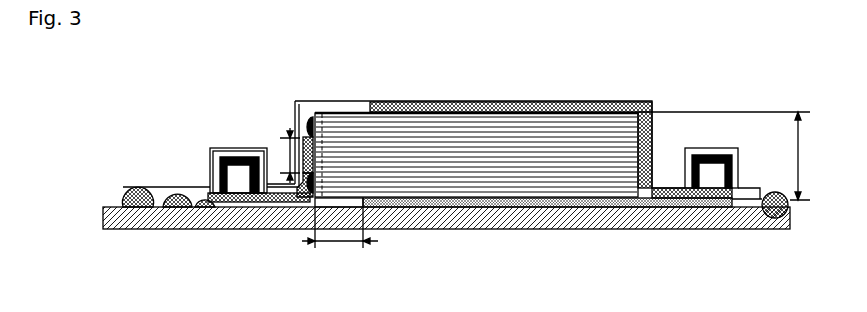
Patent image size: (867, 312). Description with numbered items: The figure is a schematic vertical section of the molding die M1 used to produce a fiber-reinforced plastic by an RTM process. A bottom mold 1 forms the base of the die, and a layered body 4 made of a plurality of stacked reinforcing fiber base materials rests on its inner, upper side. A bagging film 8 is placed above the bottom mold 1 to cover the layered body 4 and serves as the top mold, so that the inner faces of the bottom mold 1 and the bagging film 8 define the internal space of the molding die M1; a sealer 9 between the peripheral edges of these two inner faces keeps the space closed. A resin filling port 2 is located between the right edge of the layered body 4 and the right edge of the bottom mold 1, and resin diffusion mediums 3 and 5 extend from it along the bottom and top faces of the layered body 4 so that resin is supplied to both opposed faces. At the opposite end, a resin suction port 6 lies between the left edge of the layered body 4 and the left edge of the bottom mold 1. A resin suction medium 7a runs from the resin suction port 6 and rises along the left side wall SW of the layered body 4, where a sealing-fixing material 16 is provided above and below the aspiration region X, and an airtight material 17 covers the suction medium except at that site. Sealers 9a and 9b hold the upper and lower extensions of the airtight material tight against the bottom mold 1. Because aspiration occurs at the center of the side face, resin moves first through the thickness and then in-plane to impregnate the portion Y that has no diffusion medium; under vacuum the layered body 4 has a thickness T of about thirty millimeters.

The bottom mold 1 is at (730, 222).
The resin filling port 2 is at (718, 155).
The resin diffusion medium 3 is at (580, 200).
The layered body 4 is at (550, 130).
The resin diffusion medium 5 is at (627, 108).
The resin suction port 6 is at (240, 185).
The resin suction medium 7a is at (240, 193).
The bagging film 8 is at (384, 100).
The sealer 9 is at (808, 225).
The sealer 9a is at (168, 207).
The sealer 9b is at (198, 205).
The sealing-fixing material 16 is at (308, 118).
The airtight material 17 is at (266, 193).
The left side wall SW is at (322, 158).
The region X is at (290, 148).
The portion Y is at (340, 241).
The thickness T is at (738, 156).
The molding die M1 is at (492, 70).